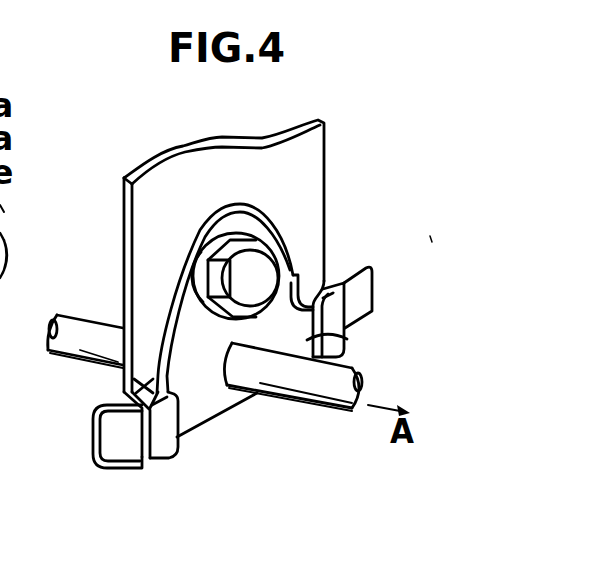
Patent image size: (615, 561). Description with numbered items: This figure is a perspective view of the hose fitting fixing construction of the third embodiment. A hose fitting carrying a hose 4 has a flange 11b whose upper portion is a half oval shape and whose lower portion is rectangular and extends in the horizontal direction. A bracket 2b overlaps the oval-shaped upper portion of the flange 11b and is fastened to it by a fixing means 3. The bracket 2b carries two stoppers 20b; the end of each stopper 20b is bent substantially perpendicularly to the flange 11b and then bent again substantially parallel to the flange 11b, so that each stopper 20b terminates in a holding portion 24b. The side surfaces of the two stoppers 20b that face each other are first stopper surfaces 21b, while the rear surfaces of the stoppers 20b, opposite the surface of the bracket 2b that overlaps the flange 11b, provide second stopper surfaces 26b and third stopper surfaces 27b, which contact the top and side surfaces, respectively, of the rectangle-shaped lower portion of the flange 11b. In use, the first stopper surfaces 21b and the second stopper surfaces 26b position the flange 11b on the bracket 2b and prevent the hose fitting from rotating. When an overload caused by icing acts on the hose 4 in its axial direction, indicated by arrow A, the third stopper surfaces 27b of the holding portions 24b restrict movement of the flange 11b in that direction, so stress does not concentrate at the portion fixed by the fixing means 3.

The bracket 2b is at (311, 163).
The fixing means 3 is at (248, 278).
The hose 4 is at (310, 385).
The flange 11b is at (200, 407).
The stopper 20b is at (120, 375).
The first stopper surface 21b is at (347, 326).
The holding portion 24b is at (163, 438).
The second stopper surface 26b is at (118, 404).
The third stopper surface 27b is at (133, 442).